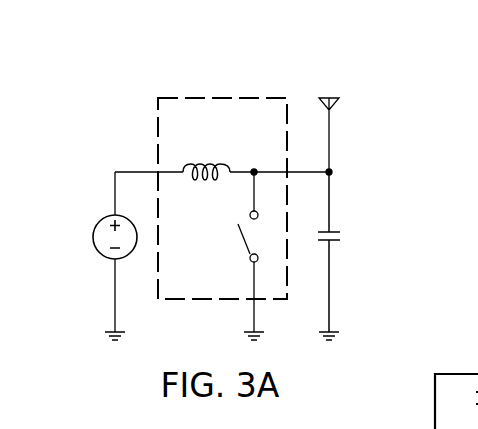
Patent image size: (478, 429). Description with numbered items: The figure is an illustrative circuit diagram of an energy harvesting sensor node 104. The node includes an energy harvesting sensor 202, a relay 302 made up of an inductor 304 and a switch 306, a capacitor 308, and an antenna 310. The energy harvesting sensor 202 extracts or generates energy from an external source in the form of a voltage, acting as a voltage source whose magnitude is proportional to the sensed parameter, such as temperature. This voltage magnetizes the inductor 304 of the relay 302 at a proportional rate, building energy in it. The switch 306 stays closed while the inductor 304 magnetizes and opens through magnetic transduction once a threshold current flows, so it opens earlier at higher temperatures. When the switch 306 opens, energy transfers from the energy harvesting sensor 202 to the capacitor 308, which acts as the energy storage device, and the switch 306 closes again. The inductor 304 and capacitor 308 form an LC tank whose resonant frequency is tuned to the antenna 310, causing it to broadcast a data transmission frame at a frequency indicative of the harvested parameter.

The energy harvesting sensor node 104 is at (104, 65).
The relay 302 is at (210, 96).
The inductor 304 is at (200, 161).
The switch 306 is at (245, 242).
The energy harvesting sensor 202 is at (93, 237).
The capacitor 308 is at (342, 237).
The antenna 310 is at (333, 96).